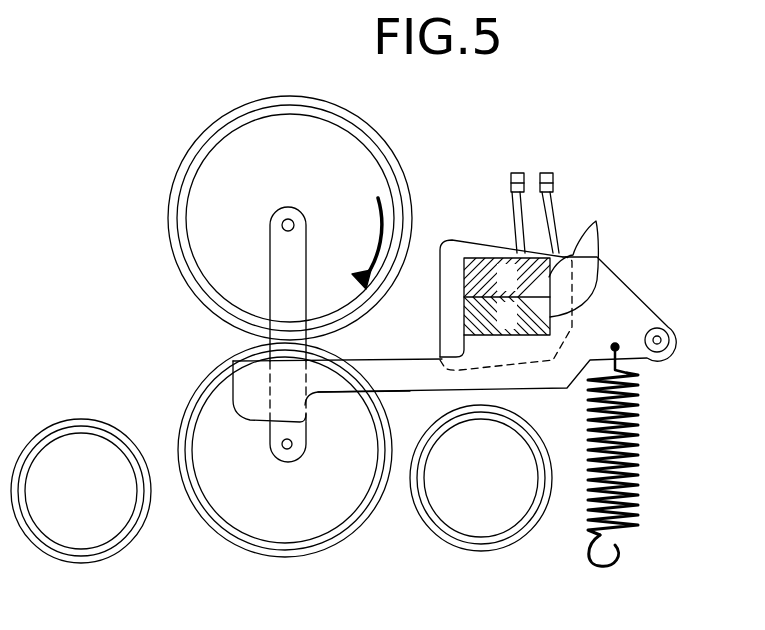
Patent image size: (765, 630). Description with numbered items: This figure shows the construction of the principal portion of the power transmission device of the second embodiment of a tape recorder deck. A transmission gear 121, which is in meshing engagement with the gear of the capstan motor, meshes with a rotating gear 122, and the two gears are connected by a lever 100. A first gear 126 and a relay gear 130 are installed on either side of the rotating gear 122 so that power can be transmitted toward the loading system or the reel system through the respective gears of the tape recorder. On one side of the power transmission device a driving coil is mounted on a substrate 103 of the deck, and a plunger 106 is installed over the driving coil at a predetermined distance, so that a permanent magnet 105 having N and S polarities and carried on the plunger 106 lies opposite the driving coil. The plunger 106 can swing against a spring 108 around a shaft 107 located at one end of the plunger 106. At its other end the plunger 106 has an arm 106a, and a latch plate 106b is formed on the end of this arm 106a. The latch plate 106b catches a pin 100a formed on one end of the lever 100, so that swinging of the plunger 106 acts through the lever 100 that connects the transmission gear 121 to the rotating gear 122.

The lever 100 is at (283, 303).
The pin 100a is at (283, 450).
The substrate 103 is at (447, 247).
The permanent magnet 105 is at (601, 256).
The plunger 106 is at (620, 290).
The arm 106a is at (408, 392).
The latch plate 106b is at (252, 437).
The shaft 107 is at (668, 332).
The spring 108 is at (635, 442).
The transmission gear 121 is at (370, 160).
The rotating gear 122 is at (317, 520).
The first gear 126 is at (92, 535).
The relay gear 130 is at (503, 513).